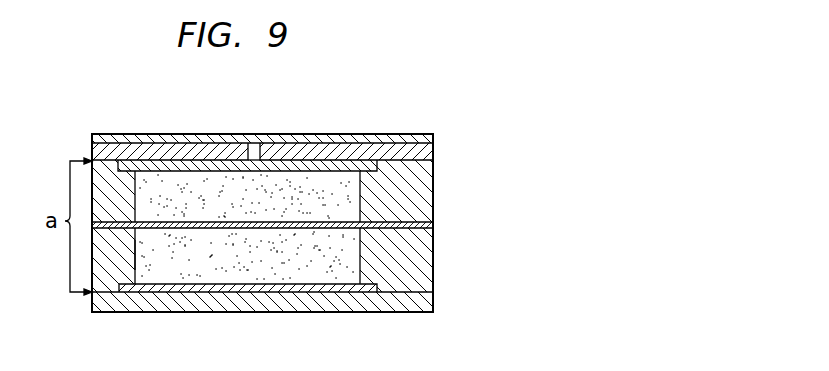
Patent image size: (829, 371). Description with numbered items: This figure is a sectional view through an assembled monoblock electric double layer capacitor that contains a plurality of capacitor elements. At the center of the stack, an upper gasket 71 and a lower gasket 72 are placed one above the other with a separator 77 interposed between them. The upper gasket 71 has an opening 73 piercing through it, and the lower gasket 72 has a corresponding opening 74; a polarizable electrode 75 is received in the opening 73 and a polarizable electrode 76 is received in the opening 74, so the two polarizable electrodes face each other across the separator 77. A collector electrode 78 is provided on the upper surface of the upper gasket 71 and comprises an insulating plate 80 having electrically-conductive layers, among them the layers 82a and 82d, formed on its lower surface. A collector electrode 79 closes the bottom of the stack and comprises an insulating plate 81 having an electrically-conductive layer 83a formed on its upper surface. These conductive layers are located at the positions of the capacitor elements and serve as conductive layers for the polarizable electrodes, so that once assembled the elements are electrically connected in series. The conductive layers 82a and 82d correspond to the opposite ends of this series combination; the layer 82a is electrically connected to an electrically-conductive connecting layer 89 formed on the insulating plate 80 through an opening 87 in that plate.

The upper gasket 71 is at (433, 198).
The lower gasket 72 is at (433, 261).
The opening 73 is at (131, 163).
The opening 74 is at (147, 267).
The polarizable electrode 75 is at (328, 185).
The polarizable electrode 76 is at (310, 270).
The separator 77 is at (424, 224).
The collector electrode 78 is at (435, 151).
The collector electrode 79 is at (436, 305).
The insulating plate 80 is at (410, 158).
The insulating plate 81 is at (393, 313).
The electrically-conductive layer 82a is at (297, 157).
The electrically-conductive layer 82d is at (93, 141).
The electrically-conductive layer 83a is at (200, 290).
The opening 87 is at (252, 152).
The electrically-conductive connecting layer 89 is at (207, 133).